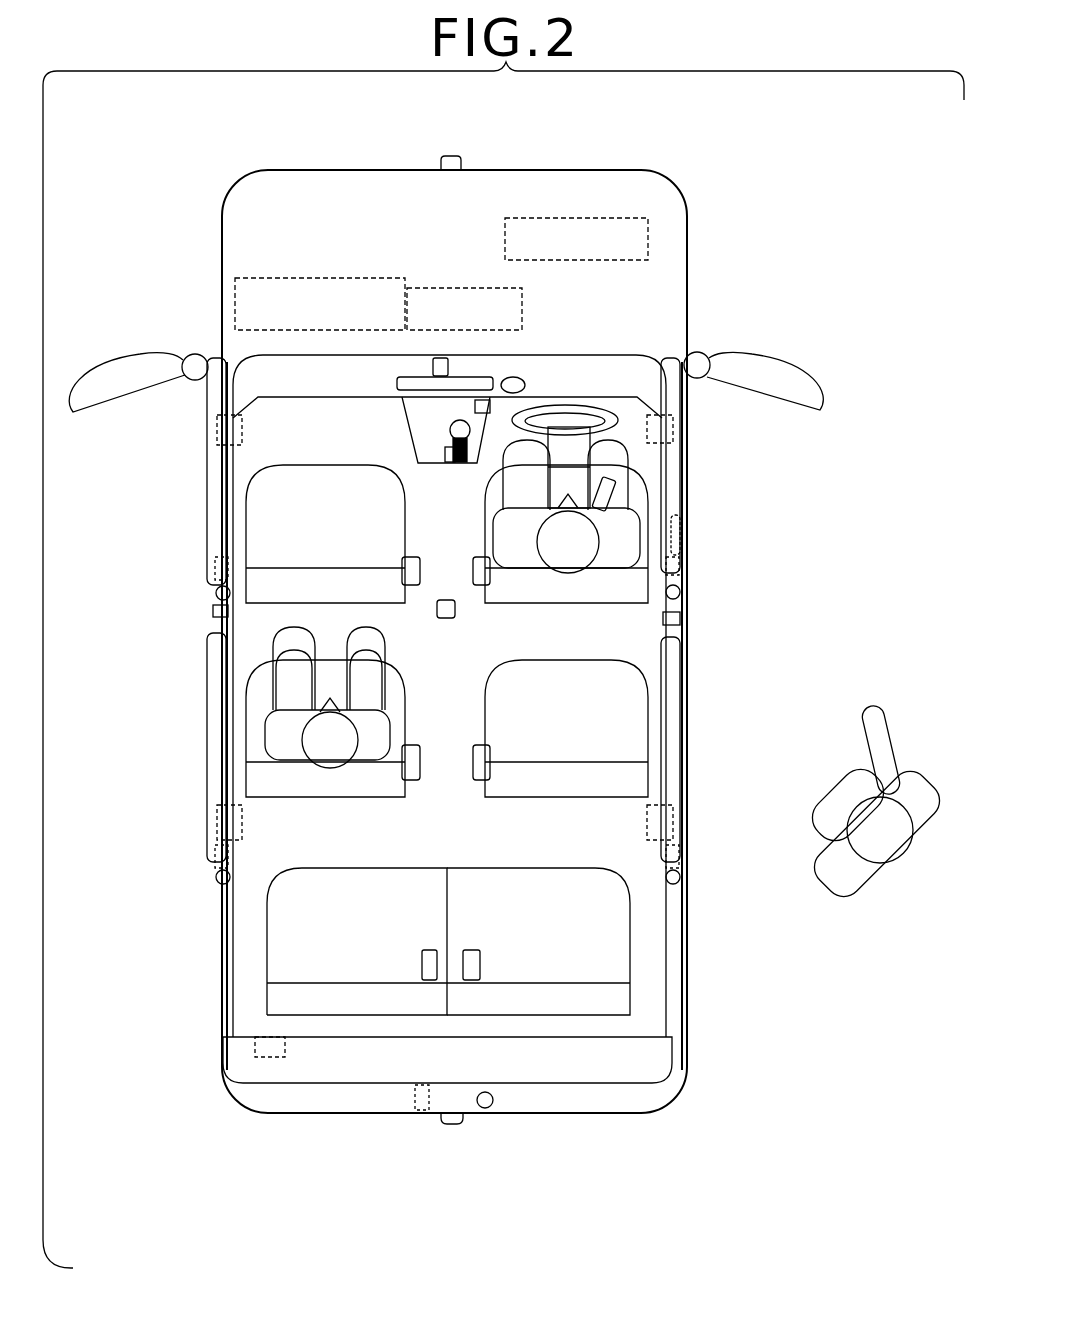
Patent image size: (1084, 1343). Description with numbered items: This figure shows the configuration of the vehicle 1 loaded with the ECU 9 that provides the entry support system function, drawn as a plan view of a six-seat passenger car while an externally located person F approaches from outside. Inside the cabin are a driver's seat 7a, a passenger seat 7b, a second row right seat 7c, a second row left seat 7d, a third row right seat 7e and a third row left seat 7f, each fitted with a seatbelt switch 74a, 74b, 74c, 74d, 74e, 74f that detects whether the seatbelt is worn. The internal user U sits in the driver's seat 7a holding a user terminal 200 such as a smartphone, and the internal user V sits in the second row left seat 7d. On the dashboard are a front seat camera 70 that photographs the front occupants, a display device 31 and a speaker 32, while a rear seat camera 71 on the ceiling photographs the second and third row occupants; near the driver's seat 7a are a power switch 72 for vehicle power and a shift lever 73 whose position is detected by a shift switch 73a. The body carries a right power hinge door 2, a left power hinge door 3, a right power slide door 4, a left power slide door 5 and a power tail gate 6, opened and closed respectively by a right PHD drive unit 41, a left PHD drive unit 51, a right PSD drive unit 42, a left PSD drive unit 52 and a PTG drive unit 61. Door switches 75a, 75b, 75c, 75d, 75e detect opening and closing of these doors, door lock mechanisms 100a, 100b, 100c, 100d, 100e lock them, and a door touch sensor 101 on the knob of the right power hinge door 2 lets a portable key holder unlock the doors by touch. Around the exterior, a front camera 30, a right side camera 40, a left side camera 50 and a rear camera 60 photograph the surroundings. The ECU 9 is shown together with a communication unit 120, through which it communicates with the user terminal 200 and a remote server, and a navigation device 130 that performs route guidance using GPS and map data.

The vehicle 1 is at (556, 166).
The right power hinge door 2 is at (688, 500).
The left power hinge door 3 is at (207, 505).
The right power slide door 4 is at (688, 750).
The left power slide door 5 is at (207, 740).
The power tail gate 6 is at (625, 1085).
The driver's seat 7a is at (485, 540).
The passenger seat 7b is at (408, 511).
The second row right seat 7c is at (485, 720).
The second row left seat 7d is at (408, 688).
The third row right seat 7e is at (527, 866).
The third row left seat 7f is at (378, 866).
The ECU 9 is at (233, 297).
The front camera 30 is at (452, 150).
The display device 31 is at (397, 384).
The speaker 32 is at (526, 385).
The right side camera 40 is at (688, 627).
The right PHD drive unit 41 is at (688, 430).
The right PSD drive unit 42 is at (673, 828).
The left side camera 50 is at (213, 611).
The left PHD drive unit 51 is at (217, 430).
The left PSD drive unit 52 is at (217, 828).
The rear camera 60 is at (452, 1125).
The PTG drive unit 61 is at (270, 1058).
The front seat camera 70 is at (449, 368).
The rear seat camera 71 is at (447, 620).
The power switch 72 is at (475, 406).
The shift lever 73 is at (451, 433).
The shift switch 73a is at (456, 463).
The seatbelt switch 74a is at (480, 588).
The seatbelt switch 74b is at (412, 588).
The seatbelt switch 74c is at (475, 782).
The seatbelt switch 74d is at (418, 782).
The seatbelt switch 74e is at (480, 960).
The seatbelt switch 74f is at (430, 948).
The door switch 75a is at (688, 598).
The door switch 75b is at (216, 597).
The door switch 75c is at (682, 879).
The door switch 75d is at (217, 879).
The door switch 75e is at (487, 1109).
The door lock mechanism 100a is at (686, 575).
The door lock mechanism 100b is at (215, 575).
The door lock mechanism 100c is at (682, 852).
The door lock mechanism 100d is at (215, 858).
The door lock mechanism 100e is at (424, 1110).
The door touch sensor 101 is at (688, 535).
The communication unit 120 is at (570, 217).
The navigation device 130 is at (438, 288).
The user terminal 200 is at (615, 482).
The internal user U is at (570, 575).
The internal user V is at (320, 755).
The externally located person F is at (898, 866).